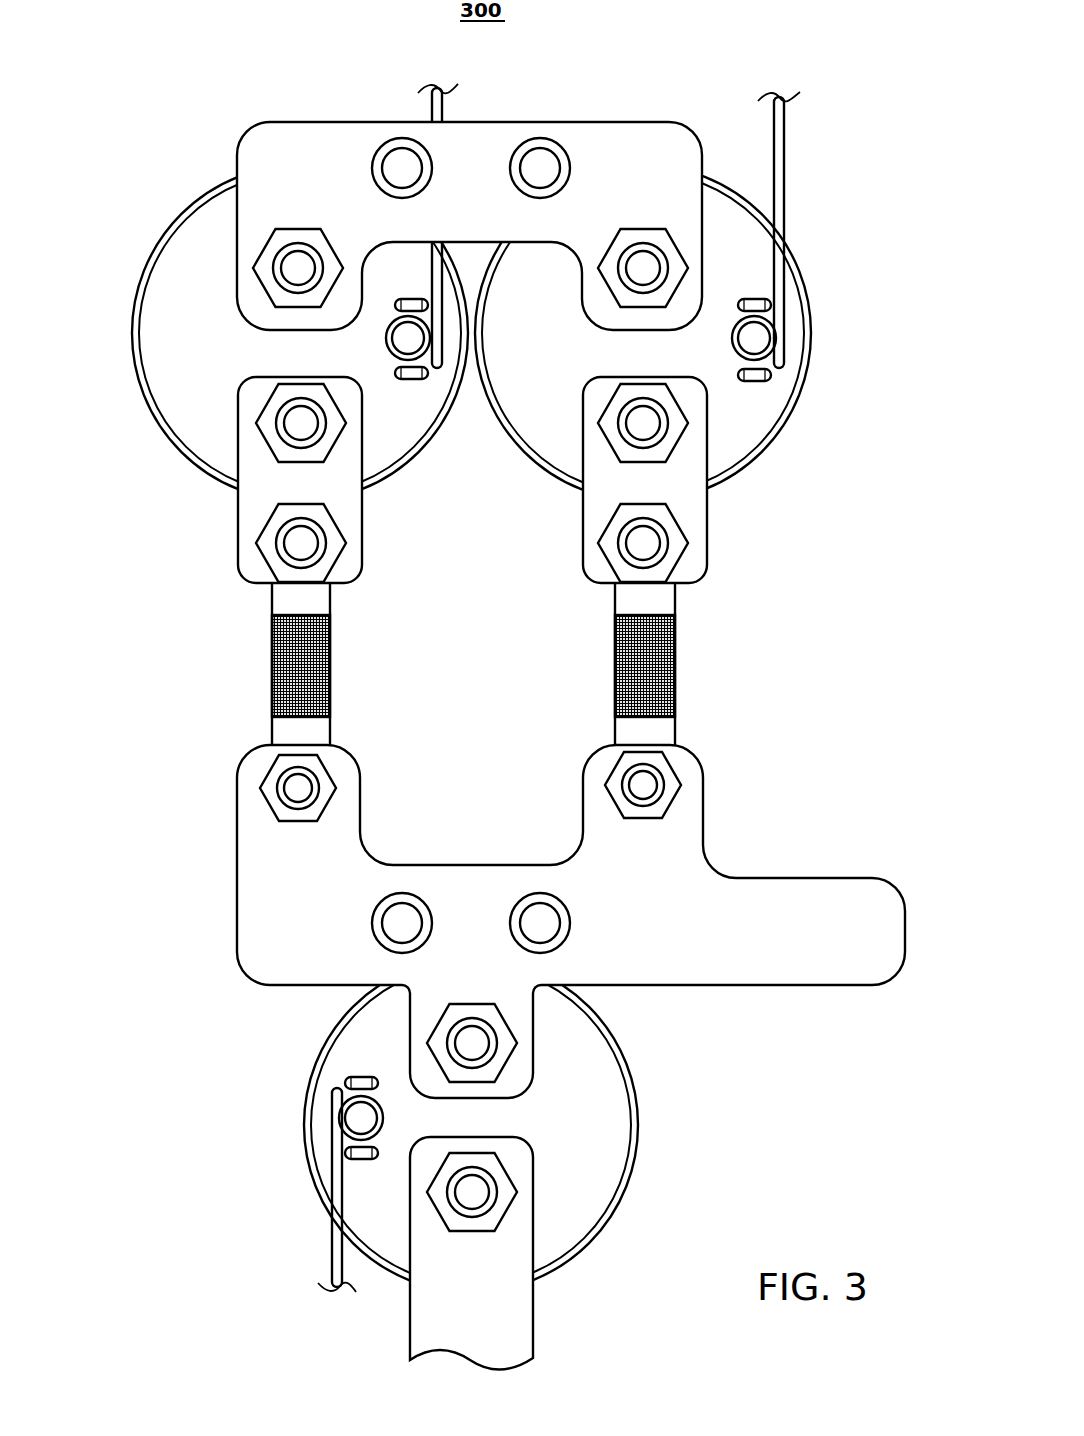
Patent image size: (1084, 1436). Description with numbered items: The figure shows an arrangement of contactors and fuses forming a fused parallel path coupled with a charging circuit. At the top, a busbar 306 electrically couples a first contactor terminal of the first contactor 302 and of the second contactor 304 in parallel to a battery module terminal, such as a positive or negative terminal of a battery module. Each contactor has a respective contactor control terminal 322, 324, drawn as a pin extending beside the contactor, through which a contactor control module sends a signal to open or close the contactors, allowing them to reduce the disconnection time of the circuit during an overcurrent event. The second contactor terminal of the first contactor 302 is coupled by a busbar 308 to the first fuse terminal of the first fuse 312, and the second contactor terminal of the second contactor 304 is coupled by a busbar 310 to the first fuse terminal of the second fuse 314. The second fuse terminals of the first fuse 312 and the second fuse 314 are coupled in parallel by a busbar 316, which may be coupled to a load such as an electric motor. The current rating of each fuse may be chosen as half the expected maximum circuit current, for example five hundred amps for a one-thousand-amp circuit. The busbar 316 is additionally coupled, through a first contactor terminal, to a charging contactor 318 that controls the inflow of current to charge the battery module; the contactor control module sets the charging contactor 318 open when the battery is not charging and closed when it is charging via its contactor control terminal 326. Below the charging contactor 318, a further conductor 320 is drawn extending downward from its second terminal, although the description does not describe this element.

The first contactor 302 is at (205, 275).
The second contactor 304 is at (750, 415).
The busbar 306 is at (272, 145).
The busbar 308 is at (250, 525).
The busbar 310 is at (693, 538).
The first fuse 312 is at (285, 670).
The second fuse 314 is at (655, 675).
The busbar 316 is at (262, 938).
The charging contactor 318 is at (595, 1118).
The bottom plate 320 is at (518, 1323).
The contactor control terminal 322 is at (408, 333).
The contactor control terminal 324 is at (758, 342).
The contactor control terminal 326 is at (357, 1118).